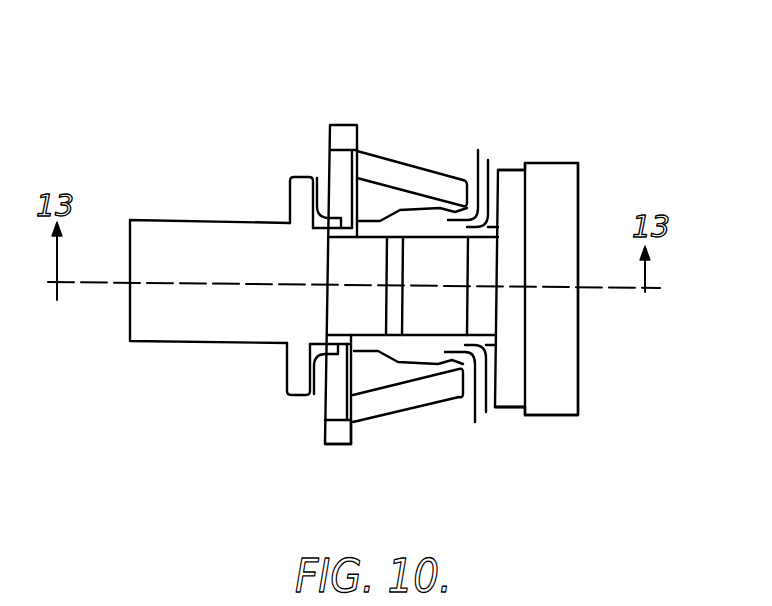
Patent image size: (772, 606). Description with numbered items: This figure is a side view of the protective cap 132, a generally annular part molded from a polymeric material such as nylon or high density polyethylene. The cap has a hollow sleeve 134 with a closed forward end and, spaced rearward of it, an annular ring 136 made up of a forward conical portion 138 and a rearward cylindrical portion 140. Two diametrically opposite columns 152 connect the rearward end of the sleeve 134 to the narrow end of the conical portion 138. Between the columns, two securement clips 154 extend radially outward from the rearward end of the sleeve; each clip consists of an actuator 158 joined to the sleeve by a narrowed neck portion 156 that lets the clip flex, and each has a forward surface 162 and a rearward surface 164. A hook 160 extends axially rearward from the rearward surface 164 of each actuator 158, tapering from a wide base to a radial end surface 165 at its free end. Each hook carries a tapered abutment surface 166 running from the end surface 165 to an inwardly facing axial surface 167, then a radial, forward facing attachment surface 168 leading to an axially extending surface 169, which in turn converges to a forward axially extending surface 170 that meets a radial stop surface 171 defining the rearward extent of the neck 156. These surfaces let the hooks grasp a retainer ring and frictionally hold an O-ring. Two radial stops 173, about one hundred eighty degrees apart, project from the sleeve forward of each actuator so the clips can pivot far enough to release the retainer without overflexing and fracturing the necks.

The protective cap 132 is at (393, 48).
The hollow sleeve 134 is at (195, 242).
The annular ring 136 is at (568, 149).
The conical portion 138 is at (510, 413).
The cylindrical portion 140 is at (568, 402).
The columns 152 is at (430, 200).
The securement clips 154 is at (409, 145).
The narrowed neck portion 156 is at (317, 180).
The actuator 158 is at (343, 140).
The hook 160 is at (433, 198).
The forward surface 162 is at (322, 436).
The rearward surface 164 is at (355, 446).
The radial end surface 165 is at (500, 367).
The tapered abutment surface 166 is at (560, 158).
The inwardly facing axial surface 167 is at (500, 228).
The attachment surface 168 is at (488, 160).
The axially extending surface 169 is at (478, 150).
The forward axially extending surface 170 is at (412, 205).
The radial stop surface 171 is at (380, 222).
The radial stops 173 is at (296, 192).